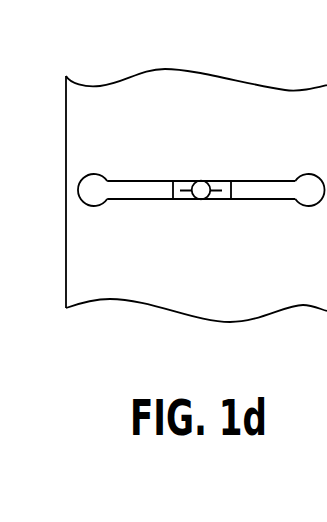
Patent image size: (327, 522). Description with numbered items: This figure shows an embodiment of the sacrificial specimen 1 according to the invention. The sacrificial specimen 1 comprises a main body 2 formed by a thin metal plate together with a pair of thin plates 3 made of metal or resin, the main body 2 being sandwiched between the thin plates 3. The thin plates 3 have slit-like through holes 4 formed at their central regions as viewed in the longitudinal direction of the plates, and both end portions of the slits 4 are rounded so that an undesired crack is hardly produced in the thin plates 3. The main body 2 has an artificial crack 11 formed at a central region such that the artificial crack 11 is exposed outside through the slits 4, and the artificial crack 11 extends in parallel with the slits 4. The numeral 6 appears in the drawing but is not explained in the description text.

The sacrificial specimen 1 is at (61, 116).
The main body 2 is at (184, 198).
The thin plates 3 is at (254, 93).
The slit-like through holes 4 is at (139, 190).
The edge region 6 is at (33, 192).
The artificial crack 11 is at (217, 199).